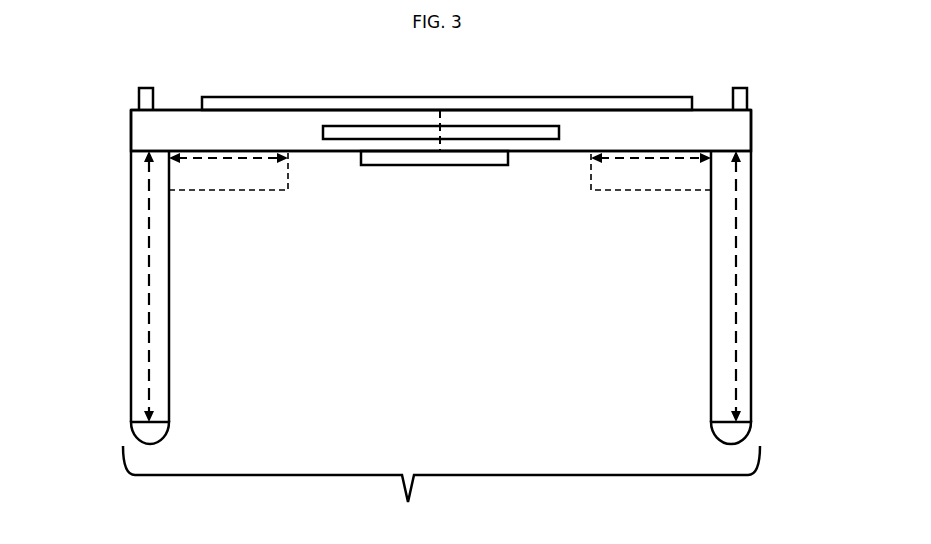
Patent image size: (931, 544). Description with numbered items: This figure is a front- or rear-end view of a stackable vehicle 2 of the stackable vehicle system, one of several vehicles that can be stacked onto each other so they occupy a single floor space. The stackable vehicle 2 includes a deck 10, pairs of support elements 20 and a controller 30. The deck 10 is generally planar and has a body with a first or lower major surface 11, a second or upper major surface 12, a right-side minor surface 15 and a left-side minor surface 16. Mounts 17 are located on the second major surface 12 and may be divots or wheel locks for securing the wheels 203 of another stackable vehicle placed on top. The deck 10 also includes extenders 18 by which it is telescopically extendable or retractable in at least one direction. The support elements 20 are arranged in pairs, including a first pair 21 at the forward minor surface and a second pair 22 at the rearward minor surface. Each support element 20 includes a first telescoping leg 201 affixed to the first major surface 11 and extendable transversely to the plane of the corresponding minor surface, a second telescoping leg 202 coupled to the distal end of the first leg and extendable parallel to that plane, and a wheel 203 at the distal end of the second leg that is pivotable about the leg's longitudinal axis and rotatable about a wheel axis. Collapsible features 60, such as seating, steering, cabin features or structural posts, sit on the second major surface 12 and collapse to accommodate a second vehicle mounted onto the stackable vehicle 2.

The stackable vehicle 2 is at (124, 105).
The deck 10 is at (138, 143).
The first major surface 11 is at (559, 151).
The second major surface 12 is at (703, 110).
The right-side minor surface 15 is at (131, 125).
The left-side minor surface 16 is at (752, 139).
The mounts 17 is at (140, 88).
The extenders 18 is at (412, 131).
The support elements 20 is at (131, 309).
The first pair 21 is at (441, 485).
The second pair 22 is at (441, 485).
The controller 30 is at (440, 158).
The collapsible features 60 is at (240, 97).
The first telescoping leg 201 is at (224, 173).
The second telescoping leg 202 is at (163, 284).
The wheel 203 is at (148, 430).